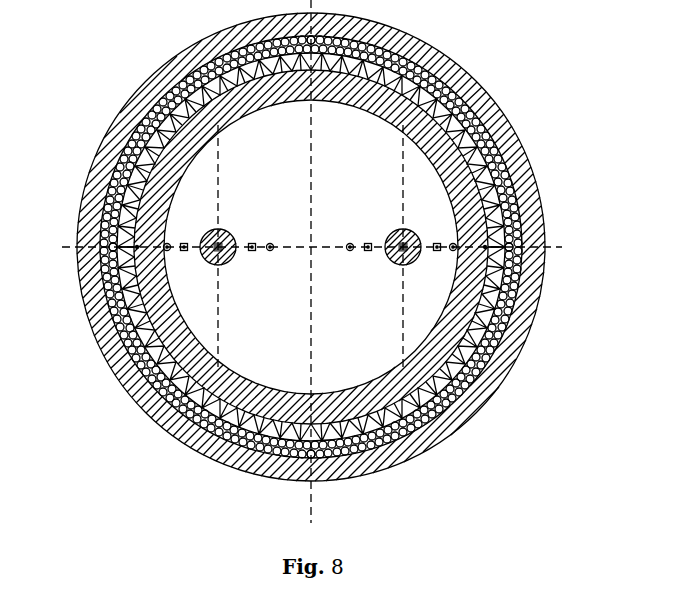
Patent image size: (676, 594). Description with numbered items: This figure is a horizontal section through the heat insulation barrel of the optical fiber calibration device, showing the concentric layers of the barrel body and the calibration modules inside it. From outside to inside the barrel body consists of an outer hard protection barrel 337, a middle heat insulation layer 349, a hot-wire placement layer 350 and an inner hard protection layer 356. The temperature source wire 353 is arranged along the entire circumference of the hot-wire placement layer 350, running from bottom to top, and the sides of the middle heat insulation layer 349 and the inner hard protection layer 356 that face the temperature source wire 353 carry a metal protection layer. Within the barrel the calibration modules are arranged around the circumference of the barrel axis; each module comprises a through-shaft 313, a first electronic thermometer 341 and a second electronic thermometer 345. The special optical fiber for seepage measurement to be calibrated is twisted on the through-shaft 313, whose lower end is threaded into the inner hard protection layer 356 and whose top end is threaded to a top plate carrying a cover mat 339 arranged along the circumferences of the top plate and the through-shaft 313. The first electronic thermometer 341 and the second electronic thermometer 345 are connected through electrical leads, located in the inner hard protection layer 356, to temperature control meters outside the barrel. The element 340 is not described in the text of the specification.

The through-shaft 313 is at (205, 234).
The outer hard protection barrel 337 is at (230, 450).
The cover mat 339 is at (165, 249).
The connector 340 is at (290, 242).
The first electronic thermometer 341 is at (181, 246).
The second electronic thermometer 345 is at (253, 243).
The middle heat insulation layer 349 is at (161, 427).
The hot-wire placement layer 350 is at (132, 402).
The temperature source wire 353 is at (279, 458).
The inner hard protection layer 356 is at (342, 455).